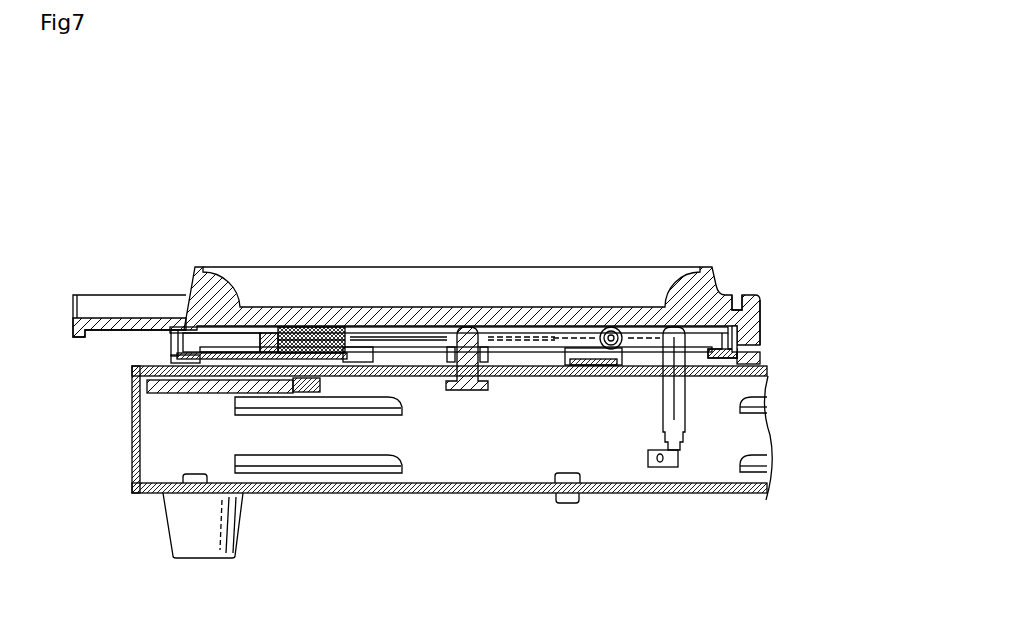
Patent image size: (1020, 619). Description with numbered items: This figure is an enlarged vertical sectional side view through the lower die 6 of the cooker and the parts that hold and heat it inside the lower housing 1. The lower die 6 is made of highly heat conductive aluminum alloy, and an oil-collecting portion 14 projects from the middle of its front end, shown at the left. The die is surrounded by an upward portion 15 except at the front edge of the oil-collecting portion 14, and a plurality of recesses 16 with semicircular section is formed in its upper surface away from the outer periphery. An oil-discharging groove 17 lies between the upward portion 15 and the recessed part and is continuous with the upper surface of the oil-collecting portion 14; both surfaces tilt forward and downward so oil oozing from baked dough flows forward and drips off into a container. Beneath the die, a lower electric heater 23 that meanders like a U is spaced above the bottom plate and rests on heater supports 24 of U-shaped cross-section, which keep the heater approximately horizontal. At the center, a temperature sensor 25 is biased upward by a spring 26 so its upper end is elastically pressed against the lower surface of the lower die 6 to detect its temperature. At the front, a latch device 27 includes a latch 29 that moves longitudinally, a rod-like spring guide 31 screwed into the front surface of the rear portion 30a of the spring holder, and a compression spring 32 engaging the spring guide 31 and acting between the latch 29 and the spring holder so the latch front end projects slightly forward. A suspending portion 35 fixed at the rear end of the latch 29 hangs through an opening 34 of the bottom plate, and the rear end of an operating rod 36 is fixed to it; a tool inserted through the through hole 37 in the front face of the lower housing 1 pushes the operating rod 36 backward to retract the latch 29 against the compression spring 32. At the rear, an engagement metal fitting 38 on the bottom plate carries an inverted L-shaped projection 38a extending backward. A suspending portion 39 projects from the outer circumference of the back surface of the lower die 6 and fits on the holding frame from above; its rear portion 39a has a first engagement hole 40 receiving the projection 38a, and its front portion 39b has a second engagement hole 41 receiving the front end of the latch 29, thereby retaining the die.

The lower housing 1 is at (477, 494).
The lower die 6 is at (562, 258).
The oil-collecting portion 14 is at (100, 317).
The upward portion 15 is at (760, 300).
The recesses 16 is at (688, 300).
The oil-discharging groove 17 is at (737, 293).
The lower electric heater 23 is at (635, 337).
The heater support 24 is at (637, 360).
The temperature sensor 25 is at (467, 333).
The spring 26 is at (498, 358).
The latch device 27 is at (246, 327).
The latch 29 is at (193, 347).
The rear portion of the spring holder 30a is at (343, 353).
The spring guide 31 is at (318, 327).
The compression spring 32 is at (303, 327).
The opening 34 is at (297, 370).
The suspending portion 35 is at (322, 370).
The operating rod 36 is at (183, 395).
The through hole 37 is at (132, 390).
The engagement metal fitting 38 is at (718, 350).
The inverted L-shaped projection 38a is at (762, 347).
The suspending portion 39 is at (765, 375).
The rear portion 39a is at (760, 358).
The front portion 39b is at (172, 358).
The first engagement hole 40 is at (762, 343).
The second engagement hole 41 is at (172, 340).